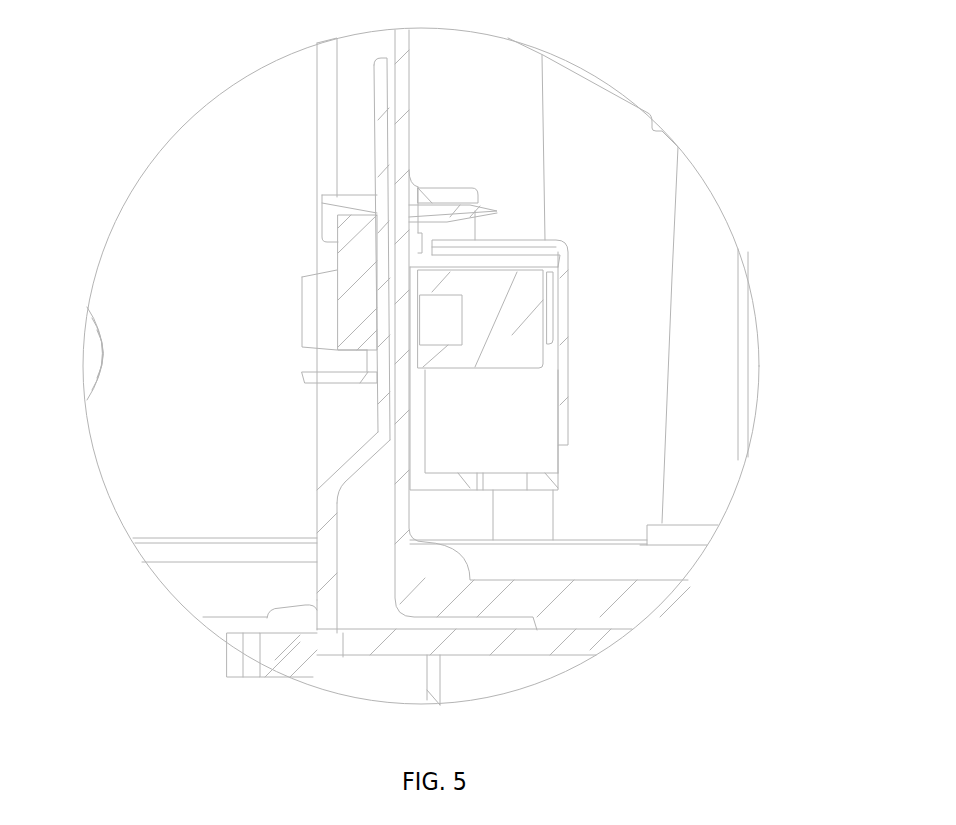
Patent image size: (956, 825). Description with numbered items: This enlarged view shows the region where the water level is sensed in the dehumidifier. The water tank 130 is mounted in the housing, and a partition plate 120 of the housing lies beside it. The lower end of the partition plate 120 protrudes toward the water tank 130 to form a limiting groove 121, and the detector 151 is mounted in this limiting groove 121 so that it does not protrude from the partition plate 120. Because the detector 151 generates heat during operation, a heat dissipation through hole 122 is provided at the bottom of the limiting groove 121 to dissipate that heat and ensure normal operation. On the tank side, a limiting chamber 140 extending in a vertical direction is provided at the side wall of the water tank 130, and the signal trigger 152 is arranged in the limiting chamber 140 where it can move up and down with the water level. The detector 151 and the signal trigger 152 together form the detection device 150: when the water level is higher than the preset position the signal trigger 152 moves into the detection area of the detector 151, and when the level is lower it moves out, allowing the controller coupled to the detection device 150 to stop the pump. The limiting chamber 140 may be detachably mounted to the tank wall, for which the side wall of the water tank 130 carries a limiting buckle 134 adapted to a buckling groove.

The partition plate 120 is at (328, 600).
The limiting groove 121 is at (370, 127).
The heat dissipation through hole 122 is at (390, 318).
The water tank 130 is at (637, 608).
The limiting buckle 134 is at (477, 210).
The limiting chamber 140 is at (565, 417).
The detection device 150 is at (621, 319).
The detector 151 is at (357, 237).
The signal trigger 152 is at (493, 323).